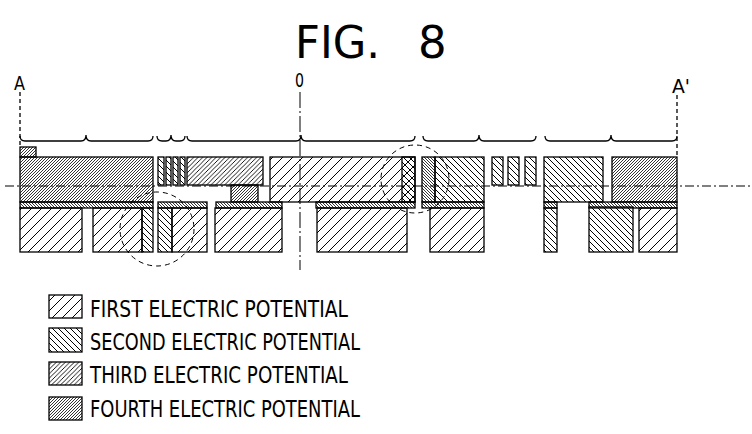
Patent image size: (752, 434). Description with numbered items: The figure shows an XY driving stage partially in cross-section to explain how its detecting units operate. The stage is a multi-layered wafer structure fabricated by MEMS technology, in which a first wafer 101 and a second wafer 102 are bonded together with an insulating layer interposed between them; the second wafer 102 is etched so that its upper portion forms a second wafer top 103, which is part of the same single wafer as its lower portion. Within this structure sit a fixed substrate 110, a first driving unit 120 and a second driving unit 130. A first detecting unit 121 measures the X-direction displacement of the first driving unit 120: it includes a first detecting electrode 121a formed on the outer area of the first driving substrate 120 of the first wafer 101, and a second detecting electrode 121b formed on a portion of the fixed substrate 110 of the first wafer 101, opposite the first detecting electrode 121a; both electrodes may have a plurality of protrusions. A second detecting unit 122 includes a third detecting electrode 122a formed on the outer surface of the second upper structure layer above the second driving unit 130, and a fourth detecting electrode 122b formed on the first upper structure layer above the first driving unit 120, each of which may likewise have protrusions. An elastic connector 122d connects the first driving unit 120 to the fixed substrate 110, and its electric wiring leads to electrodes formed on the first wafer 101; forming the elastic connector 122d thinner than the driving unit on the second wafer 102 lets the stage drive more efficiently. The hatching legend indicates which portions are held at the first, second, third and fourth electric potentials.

The first wafer 101 is at (677, 232).
The second wafer 102 is at (677, 196).
The second wafer top 103 is at (677, 172).
The fixed substrate 110 is at (348, 155).
The first driving unit 120 is at (346, 155).
The second driving unit 130 is at (301, 155).
The first detecting unit 121 is at (181, 259).
The first detecting electrode 121a is at (176, 254).
The second detecting electrode 121b is at (143, 254).
The second detecting unit 122 is at (418, 147).
The third detecting electrode 122a is at (403, 153).
The fourth detecting electrode 122b is at (430, 157).
The elastic connector 122d is at (514, 157).